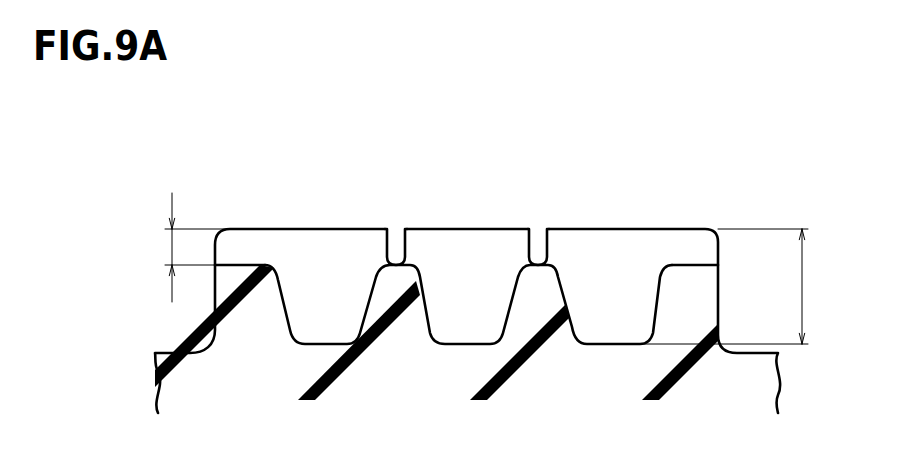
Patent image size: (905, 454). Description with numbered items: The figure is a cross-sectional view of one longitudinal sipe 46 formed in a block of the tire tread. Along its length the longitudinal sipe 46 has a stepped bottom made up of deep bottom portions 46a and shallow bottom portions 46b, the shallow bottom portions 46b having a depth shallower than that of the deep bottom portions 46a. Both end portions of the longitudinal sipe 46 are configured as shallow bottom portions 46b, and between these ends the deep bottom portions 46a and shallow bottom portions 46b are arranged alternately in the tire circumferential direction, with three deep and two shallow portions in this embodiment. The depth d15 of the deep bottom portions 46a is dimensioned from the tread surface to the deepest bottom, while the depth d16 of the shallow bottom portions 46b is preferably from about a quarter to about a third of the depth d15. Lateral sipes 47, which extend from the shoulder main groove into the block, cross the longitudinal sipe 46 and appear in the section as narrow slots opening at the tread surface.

The longitudinal sipe 46 is at (661, 252).
The deep bottom portion 46a is at (322, 317).
The shallow bottom portion 46b is at (243, 262).
The lateral sipe 47 is at (396, 236).
The depth of the deep bottom portion d15 is at (753, 286).
The depth of the shallow bottom portion d16 is at (186, 247).